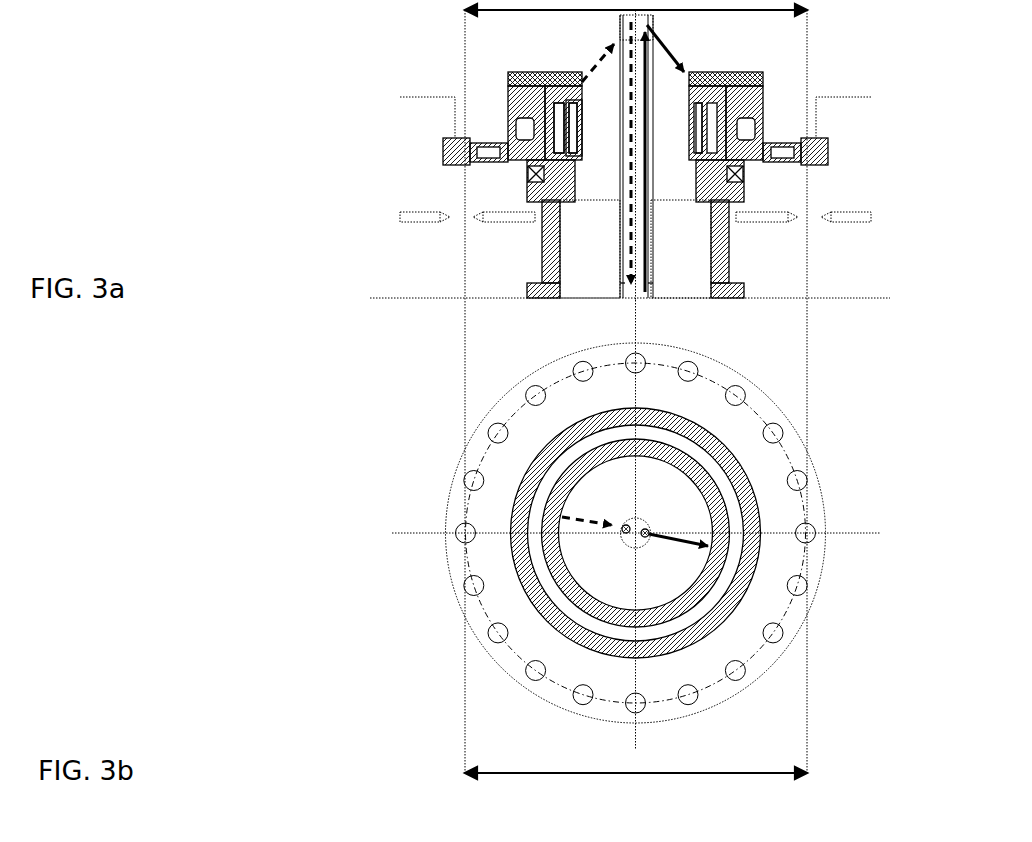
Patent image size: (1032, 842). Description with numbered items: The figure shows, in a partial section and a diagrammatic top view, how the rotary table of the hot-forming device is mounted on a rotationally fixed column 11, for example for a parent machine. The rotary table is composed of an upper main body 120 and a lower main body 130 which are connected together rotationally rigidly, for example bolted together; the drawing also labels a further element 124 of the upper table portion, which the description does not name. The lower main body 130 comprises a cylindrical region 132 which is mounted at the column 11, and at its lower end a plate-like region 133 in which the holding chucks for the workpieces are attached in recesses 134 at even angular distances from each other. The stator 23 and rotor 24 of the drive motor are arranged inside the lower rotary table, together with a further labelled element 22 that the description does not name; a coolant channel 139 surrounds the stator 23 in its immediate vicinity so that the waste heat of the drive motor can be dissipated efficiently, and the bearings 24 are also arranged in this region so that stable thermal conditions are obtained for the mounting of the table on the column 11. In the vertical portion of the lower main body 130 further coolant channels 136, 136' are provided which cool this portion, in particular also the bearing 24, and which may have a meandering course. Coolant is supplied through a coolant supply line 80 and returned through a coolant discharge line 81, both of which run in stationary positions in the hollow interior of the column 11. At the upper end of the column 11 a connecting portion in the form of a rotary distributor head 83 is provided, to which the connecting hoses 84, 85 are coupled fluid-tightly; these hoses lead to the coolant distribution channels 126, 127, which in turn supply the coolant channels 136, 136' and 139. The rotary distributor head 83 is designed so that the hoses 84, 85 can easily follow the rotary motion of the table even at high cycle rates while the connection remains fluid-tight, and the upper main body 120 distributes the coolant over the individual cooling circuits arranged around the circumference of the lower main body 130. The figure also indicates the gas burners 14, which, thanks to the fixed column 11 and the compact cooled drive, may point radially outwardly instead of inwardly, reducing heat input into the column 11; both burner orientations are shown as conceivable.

In FIG. 3A, the rotationally fixed column 11 is at (713, 257).
In FIG. 3A, the gas burners 14 is at (760, 220).
In FIG. 3A, the bearing element 22 is at (577, 145).
In FIG. 3A, the stator 23 is at (562, 148).
In FIG. 3A, the rotor 24 is at (735, 178).
In FIG. 3A, the coolant supply line 80 is at (650, 283).
In FIG. 3A, the coolant discharge line 81 is at (622, 283).
In FIG. 3A, the connecting portion (rotary distributor head) 83 is at (655, 20).
In FIG. 3A, the connecting hose 84 is at (672, 57).
In FIG. 3B, the connecting hose 84 is at (649, 535).
In FIG. 3A, the connecting hose 85 is at (608, 50).
In FIG. 3B, the connecting hose 85 is at (622, 529).
In FIG. 3A, the upper main body 120 is at (763, 90).
In FIG. 3A, the cover 124 is at (763, 73).
In FIG. 3A, the coolant distribution channel 126 is at (513, 88).
In FIG. 3A, the coolant distribution channel 127 is at (562, 83).
In FIG. 3B, the coolant distribution channel 127 is at (710, 455).
In FIG. 3B, the lower main body 130 is at (813, 562).
In FIG. 3A, the cylindrical region 132 is at (763, 110).
In FIG. 3B, the cylindrical region 132 is at (747, 470).
In FIG. 3A, the plate-like region 133 is at (822, 153).
In FIG. 3B, the recesses 134 is at (798, 478).
In FIG. 3A, the coolant channel 136 is at (422, 123).
In FIG. 3A, the coolant channel 136' is at (419, 140).
In FIG. 3A, the coolant channel 139 is at (713, 127).